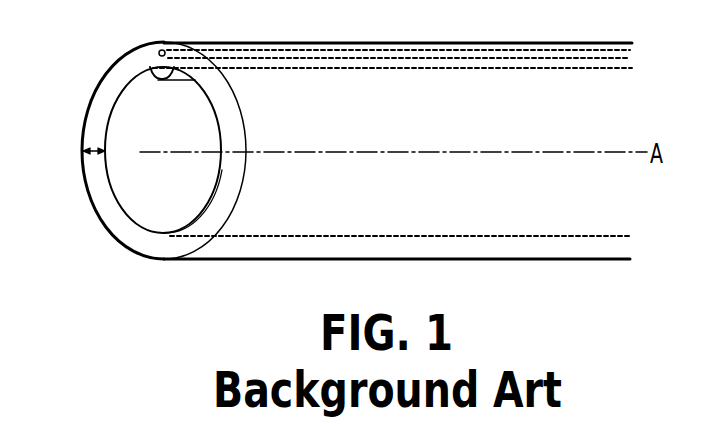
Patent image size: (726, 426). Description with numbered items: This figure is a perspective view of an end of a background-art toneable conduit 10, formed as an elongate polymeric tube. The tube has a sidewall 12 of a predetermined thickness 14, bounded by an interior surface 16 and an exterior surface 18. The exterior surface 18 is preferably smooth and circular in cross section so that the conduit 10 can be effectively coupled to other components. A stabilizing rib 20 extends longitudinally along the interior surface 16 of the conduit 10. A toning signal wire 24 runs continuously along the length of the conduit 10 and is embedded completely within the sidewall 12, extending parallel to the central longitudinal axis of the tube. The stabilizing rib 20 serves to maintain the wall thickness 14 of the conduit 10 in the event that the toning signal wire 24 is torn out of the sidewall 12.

The toneable conduit 10 is at (550, 260).
The sidewall 12 is at (207, 225).
The thickness 14 is at (85, 153).
The interior surface 16 is at (125, 208).
The exterior surface 18 is at (122, 245).
The stabilizing rib 20 is at (152, 70).
The toning signal wire 24 is at (158, 44).